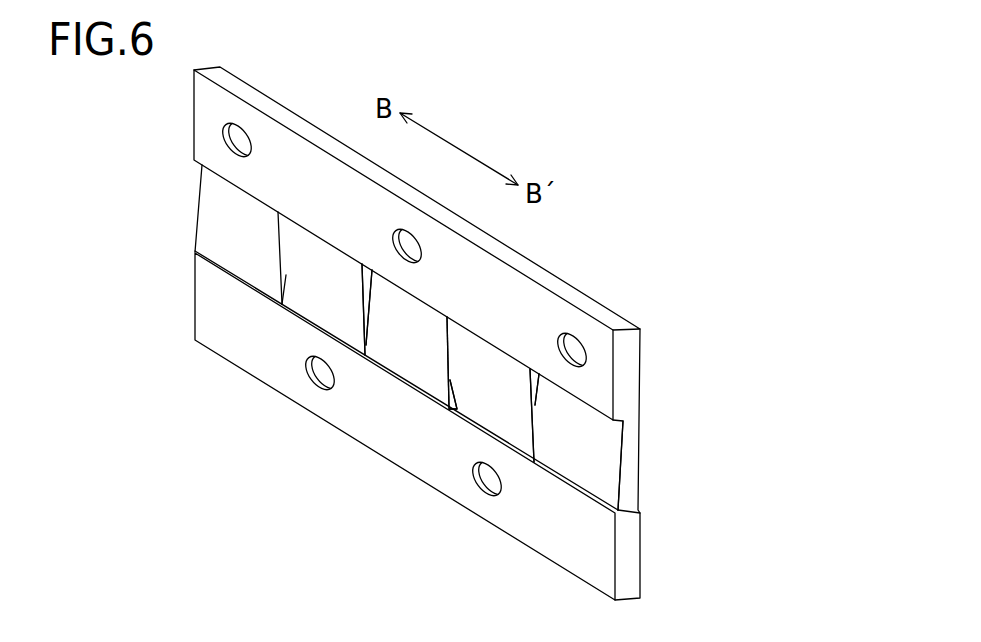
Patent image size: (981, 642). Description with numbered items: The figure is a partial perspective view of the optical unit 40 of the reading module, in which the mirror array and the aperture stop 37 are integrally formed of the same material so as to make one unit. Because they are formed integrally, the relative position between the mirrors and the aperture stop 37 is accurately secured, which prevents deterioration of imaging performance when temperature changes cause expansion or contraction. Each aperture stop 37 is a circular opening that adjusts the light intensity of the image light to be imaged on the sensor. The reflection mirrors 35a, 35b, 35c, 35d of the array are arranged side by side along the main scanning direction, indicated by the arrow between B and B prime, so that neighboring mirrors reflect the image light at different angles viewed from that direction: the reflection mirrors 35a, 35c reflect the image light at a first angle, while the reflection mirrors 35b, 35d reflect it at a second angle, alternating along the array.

The optical unit 40 is at (573, 147).
The aperture stop 37 is at (567, 332).
The reflection mirror 35a is at (572, 455).
The reflection mirror 35b is at (490, 407).
The reflection mirror 35c is at (412, 363).
The reflection mirror 35d is at (322, 305).